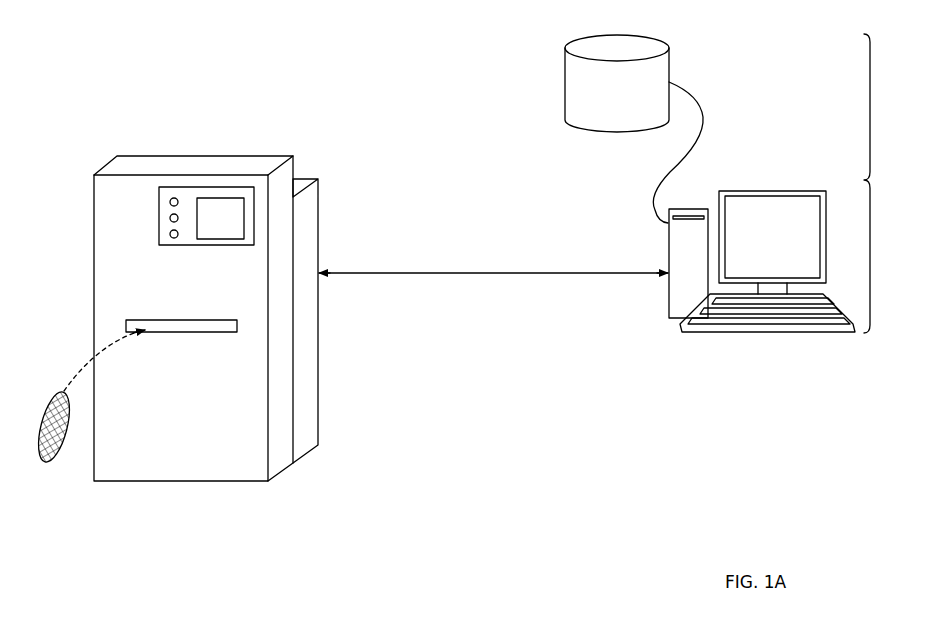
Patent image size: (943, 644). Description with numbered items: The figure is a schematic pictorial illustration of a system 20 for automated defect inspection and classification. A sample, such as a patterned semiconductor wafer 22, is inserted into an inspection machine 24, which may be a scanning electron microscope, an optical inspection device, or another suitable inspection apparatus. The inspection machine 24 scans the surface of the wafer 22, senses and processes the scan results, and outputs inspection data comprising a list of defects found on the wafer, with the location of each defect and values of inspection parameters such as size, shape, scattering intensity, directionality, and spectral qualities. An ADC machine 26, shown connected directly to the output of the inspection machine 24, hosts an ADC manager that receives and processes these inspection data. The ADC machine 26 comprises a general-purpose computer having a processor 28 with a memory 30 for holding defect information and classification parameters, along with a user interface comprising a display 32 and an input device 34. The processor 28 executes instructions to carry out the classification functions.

The system 20 is at (96, 99).
The patterned semiconductor wafer 22 is at (50, 466).
The inspection machine 24 is at (208, 156).
The ADC machine 26 is at (880, 183).
The processor 28 is at (669, 315).
The memory 30 is at (565, 84).
The display 32 is at (770, 191).
The input device 34 is at (834, 333).